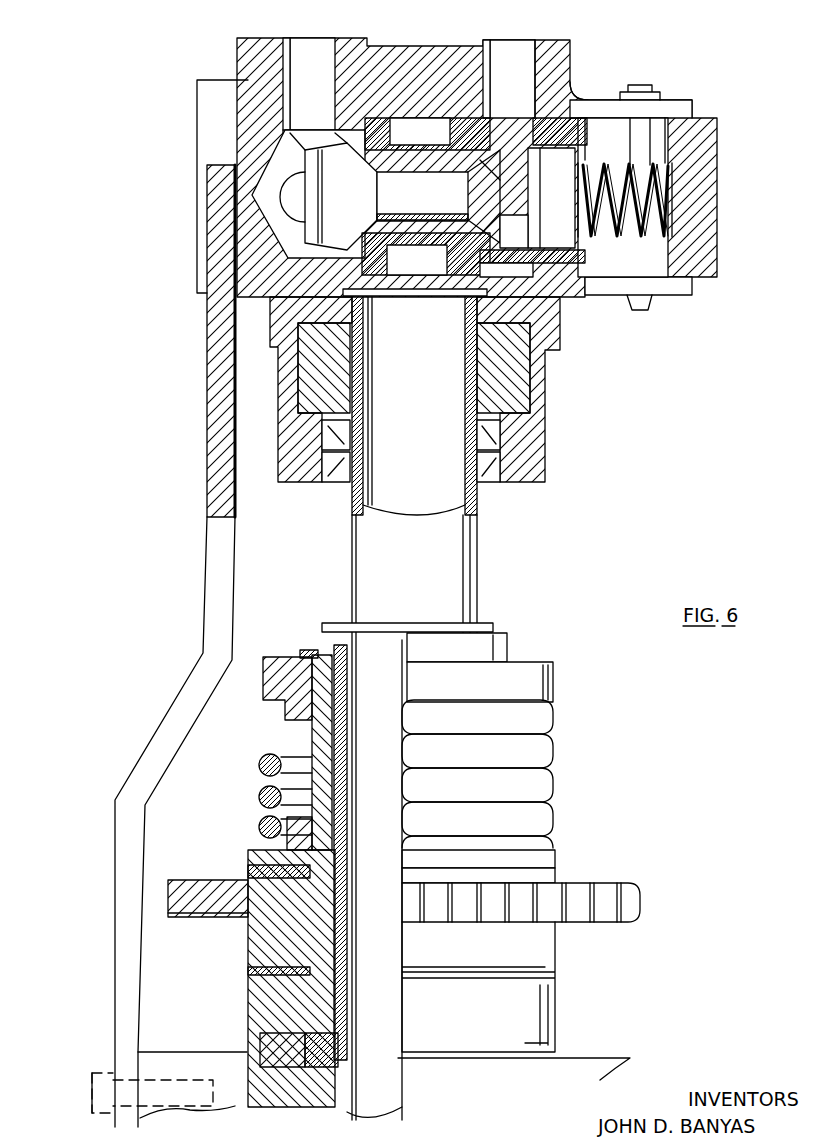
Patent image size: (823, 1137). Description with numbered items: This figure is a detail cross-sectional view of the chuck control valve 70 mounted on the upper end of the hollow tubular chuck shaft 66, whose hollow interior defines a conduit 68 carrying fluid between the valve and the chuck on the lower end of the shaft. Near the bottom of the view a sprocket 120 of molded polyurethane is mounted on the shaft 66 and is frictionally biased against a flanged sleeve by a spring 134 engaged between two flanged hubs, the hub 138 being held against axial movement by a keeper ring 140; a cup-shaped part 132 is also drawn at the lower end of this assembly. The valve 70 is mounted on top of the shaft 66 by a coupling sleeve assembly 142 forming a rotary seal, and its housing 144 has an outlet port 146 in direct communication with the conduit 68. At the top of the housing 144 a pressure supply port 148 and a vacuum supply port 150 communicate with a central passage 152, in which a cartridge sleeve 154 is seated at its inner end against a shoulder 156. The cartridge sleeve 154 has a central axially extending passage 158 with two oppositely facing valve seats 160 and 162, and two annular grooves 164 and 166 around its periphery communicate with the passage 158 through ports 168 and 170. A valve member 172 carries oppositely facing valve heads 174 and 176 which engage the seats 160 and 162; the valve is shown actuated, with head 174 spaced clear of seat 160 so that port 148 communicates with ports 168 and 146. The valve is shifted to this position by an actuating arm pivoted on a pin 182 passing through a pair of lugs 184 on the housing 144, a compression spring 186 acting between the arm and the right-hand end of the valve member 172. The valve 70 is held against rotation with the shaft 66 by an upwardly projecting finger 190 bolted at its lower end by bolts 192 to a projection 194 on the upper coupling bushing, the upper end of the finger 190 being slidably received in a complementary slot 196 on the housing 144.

The hollow tubular chuck shaft 66 is at (462, 560).
The conduit 68 is at (428, 398).
The control valve 70 is at (588, 391).
The sprocket 120 is at (640, 910).
The cup member 132 is at (556, 970).
The spring 134 is at (545, 751).
The flanged hub 138 is at (540, 690).
The keeper ring 140 is at (510, 648).
The coupling sleeve assembly 142 is at (534, 456).
The valve housing 144 is at (560, 52).
The outlet port 146 is at (437, 297).
The pressure supply port 148 is at (320, 48).
The vacuum supply port 150 is at (522, 50).
The central passage 152 is at (328, 140).
The cartridge sleeve 154 is at (590, 285).
The shoulder 156 is at (380, 296).
The central axially extending passage 158 is at (458, 165).
The valve seat 160 is at (314, 194).
The valve seat 162 is at (515, 140).
The annular groove 164 is at (397, 122).
The annular groove 166 is at (552, 100).
The port 168 is at (430, 237).
The port 170 is at (518, 243).
The valve member 172 is at (450, 196).
The valve head 174 is at (356, 212).
The valve head 176 is at (520, 182).
The pin 182 is at (642, 88).
The lug 184 is at (690, 108).
The compression spring 186 is at (685, 208).
The finger 190 is at (206, 577).
The bolt 192 is at (100, 1095).
The projection 194 is at (196, 1100).
The slot 196 is at (200, 128).